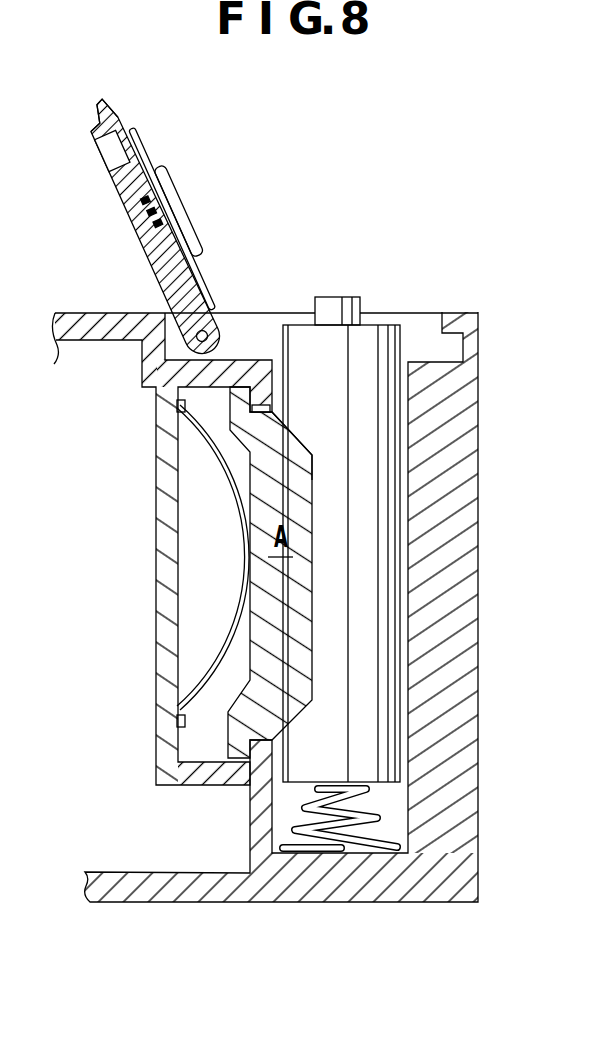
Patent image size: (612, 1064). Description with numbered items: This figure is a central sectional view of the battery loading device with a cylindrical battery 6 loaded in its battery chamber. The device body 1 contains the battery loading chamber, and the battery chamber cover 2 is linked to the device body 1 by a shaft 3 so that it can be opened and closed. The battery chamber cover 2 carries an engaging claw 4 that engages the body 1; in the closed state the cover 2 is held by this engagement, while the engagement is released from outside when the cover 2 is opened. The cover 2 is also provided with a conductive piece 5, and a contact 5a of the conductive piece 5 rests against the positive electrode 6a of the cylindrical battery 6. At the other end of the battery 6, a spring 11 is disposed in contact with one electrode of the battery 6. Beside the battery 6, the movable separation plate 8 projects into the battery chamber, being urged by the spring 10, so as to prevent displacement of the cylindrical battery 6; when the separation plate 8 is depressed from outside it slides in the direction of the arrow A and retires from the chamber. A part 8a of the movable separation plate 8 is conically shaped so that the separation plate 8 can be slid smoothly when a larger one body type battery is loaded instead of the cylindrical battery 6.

The device body 1 is at (463, 457).
The battery chamber cover 2 is at (157, 261).
The shaft 3 is at (207, 330).
The engaging claw 4 is at (110, 112).
The conductive piece 5 is at (130, 140).
The contact 5a is at (177, 200).
The cylindrical battery 6 is at (370, 333).
The positive electrode 6a is at (333, 307).
The movable separation plate 8 is at (290, 590).
The conically shaped part of the movable separation plate 8a is at (287, 433).
The spring 10 is at (218, 664).
The spring 11 is at (367, 805).